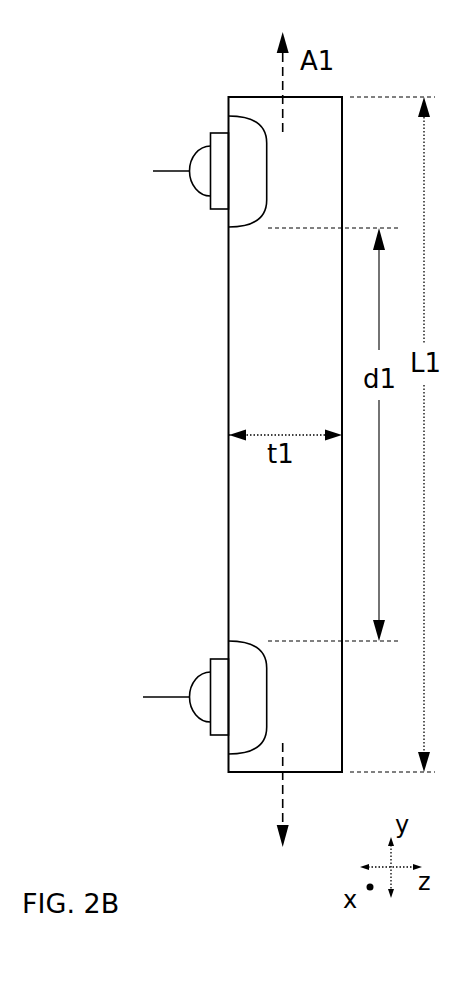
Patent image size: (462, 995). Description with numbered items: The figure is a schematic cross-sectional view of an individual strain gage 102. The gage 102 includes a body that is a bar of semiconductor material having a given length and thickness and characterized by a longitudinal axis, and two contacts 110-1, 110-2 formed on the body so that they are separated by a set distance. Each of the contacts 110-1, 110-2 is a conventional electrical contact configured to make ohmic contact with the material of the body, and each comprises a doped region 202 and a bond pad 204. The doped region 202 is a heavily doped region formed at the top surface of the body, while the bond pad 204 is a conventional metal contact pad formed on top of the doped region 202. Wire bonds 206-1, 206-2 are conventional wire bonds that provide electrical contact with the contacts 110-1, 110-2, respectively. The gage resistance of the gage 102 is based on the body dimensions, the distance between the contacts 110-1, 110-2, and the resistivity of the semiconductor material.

The strain gage 102 is at (76, 80).
The doped region 202 is at (248, 227).
The bond pad 204 is at (220, 147).
The contact 110-1 is at (203, 617).
The contact 110-2 is at (206, 250).
The wire bond 206-1 is at (162, 697).
The wire bond 206-2 is at (163, 171).